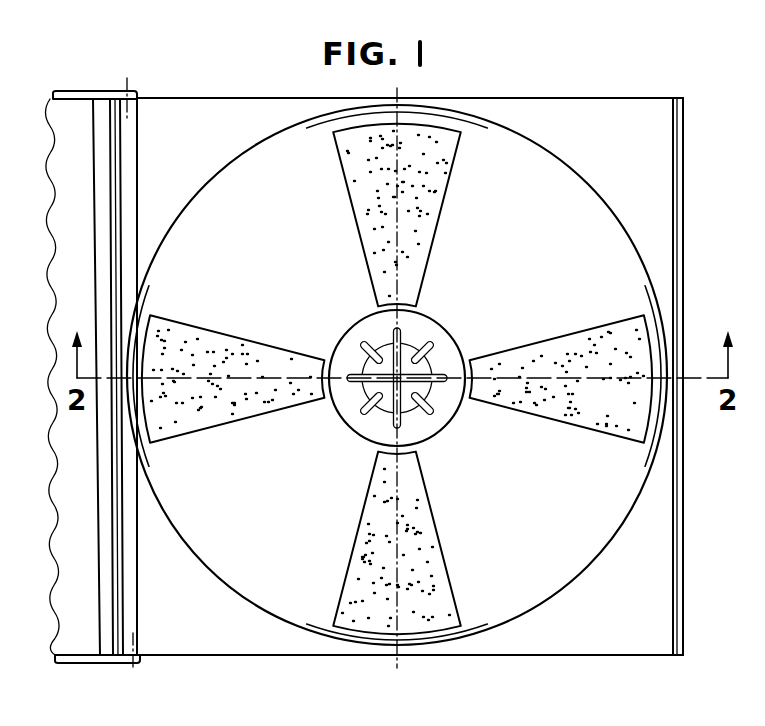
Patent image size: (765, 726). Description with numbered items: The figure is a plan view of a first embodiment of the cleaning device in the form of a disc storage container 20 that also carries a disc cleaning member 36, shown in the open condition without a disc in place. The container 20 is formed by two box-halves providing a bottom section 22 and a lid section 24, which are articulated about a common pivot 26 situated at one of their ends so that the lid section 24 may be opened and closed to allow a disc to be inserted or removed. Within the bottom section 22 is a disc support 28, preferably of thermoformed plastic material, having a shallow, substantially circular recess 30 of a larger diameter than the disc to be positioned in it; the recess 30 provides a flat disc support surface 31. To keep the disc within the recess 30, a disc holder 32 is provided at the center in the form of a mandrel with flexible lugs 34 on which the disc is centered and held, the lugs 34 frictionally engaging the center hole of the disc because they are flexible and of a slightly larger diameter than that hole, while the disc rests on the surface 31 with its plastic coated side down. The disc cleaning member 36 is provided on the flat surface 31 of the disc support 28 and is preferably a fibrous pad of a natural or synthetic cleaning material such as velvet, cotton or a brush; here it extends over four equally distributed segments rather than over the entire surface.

The disc storage container 20 is at (493, 90).
The bottom section 22 is at (680, 640).
The lid section 24 is at (93, 648).
The common pivot 26 is at (133, 668).
The disc support 28 is at (596, 640).
The recess 30 is at (580, 578).
The disc support surface 31 is at (508, 493).
The disc holder 32 is at (444, 349).
The flexible lugs 34 is at (370, 396).
The disc cleaning member 36 is at (433, 181).